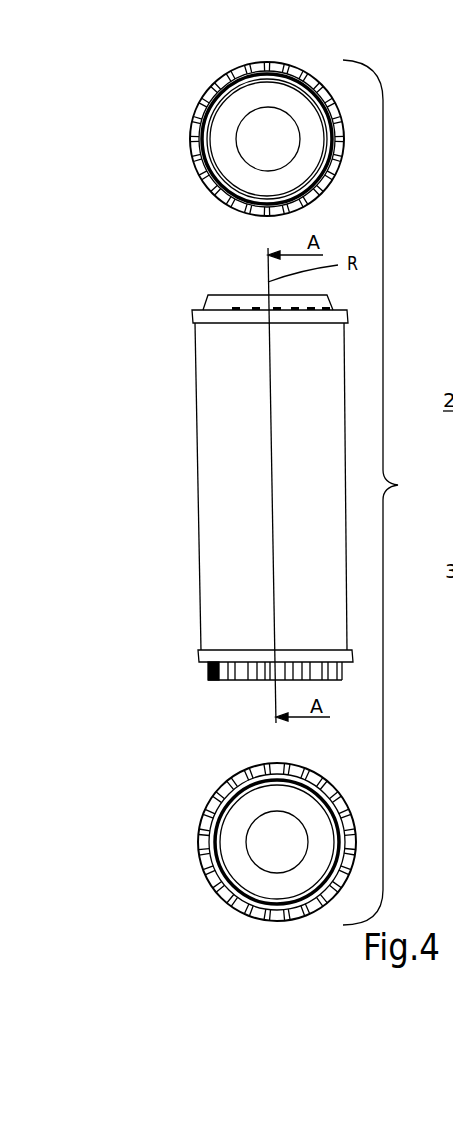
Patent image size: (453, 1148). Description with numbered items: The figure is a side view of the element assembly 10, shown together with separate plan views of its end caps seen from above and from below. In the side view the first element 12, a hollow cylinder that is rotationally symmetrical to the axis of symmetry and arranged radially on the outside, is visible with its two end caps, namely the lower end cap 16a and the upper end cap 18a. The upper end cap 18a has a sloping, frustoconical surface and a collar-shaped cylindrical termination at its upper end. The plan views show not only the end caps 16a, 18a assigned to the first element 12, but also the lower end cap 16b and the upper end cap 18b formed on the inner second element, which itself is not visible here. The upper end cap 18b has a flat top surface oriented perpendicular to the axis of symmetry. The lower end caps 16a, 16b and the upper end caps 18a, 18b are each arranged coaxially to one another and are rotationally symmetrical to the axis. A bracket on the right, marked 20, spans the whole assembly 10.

The element assembly 10 is at (219, 491).
The first element 12 is at (215, 508).
The lower end cap 16a is at (218, 670).
The lower end cap 16b is at (233, 822).
The upper end cap 18a is at (195, 138).
The upper end cap 18b is at (220, 140).
The filter assembly 20 is at (398, 492).